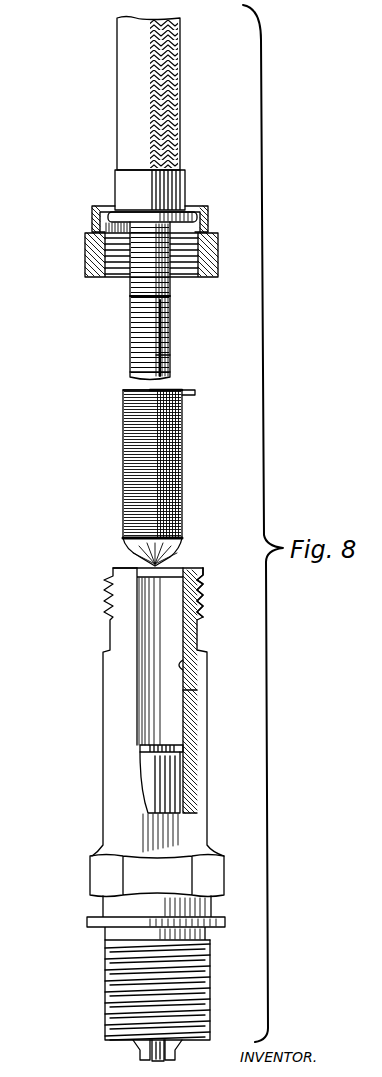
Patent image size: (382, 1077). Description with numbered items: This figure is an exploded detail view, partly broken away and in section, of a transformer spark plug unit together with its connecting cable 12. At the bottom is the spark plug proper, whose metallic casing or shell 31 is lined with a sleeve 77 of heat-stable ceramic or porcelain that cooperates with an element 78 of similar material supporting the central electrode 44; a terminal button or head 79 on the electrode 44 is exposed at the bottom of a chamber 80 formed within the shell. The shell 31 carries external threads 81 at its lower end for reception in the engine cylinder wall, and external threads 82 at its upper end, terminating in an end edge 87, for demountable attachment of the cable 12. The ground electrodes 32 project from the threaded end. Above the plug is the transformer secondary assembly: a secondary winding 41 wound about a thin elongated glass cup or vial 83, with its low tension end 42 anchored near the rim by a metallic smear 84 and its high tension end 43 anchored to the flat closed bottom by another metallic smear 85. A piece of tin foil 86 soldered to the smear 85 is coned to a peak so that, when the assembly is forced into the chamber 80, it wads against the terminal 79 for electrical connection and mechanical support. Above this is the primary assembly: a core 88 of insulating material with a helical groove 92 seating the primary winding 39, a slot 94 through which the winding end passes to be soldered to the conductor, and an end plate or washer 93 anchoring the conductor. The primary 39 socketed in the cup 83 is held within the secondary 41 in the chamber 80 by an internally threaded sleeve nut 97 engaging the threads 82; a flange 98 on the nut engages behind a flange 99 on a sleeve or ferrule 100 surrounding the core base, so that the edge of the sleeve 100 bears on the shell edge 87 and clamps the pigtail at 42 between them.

The connecting cable 12 is at (117, 116).
The sleeve or ferrule 100 is at (183, 189).
The flange 98 is at (105, 206).
The flange 99 is at (200, 216).
The sleeve nut 97 is at (86, 259).
The core 88 is at (132, 323).
The helical groove 92 is at (134, 301).
The primary winding 39 is at (168, 332).
The slot 94 is at (170, 359).
The end plate or washer 93 is at (131, 372).
The secondary winding 41 is at (182, 466).
The cup or vial 83 is at (123, 391).
The body or smear of metallic material 84 is at (180, 391).
The low tension end 42 is at (195, 393).
The piece of metallic foil 86 is at (176, 556).
The smear or body of metallic material 85 is at (123, 539).
The high tension end 43 is at (182, 545).
The metallic casing or shell 31 is at (200, 720).
The external threads 82 is at (204, 606).
The edge 87 is at (113, 570).
The chamber 80 is at (190, 665).
The sleeve of insulating material 77 is at (193, 694).
The terminal button or head 79 is at (185, 749).
The element of insulating material 78 is at (167, 785).
The external threads 81 is at (210, 973).
The ground electrode 32 is at (133, 1047).
The central electrode 44 is at (152, 1063).